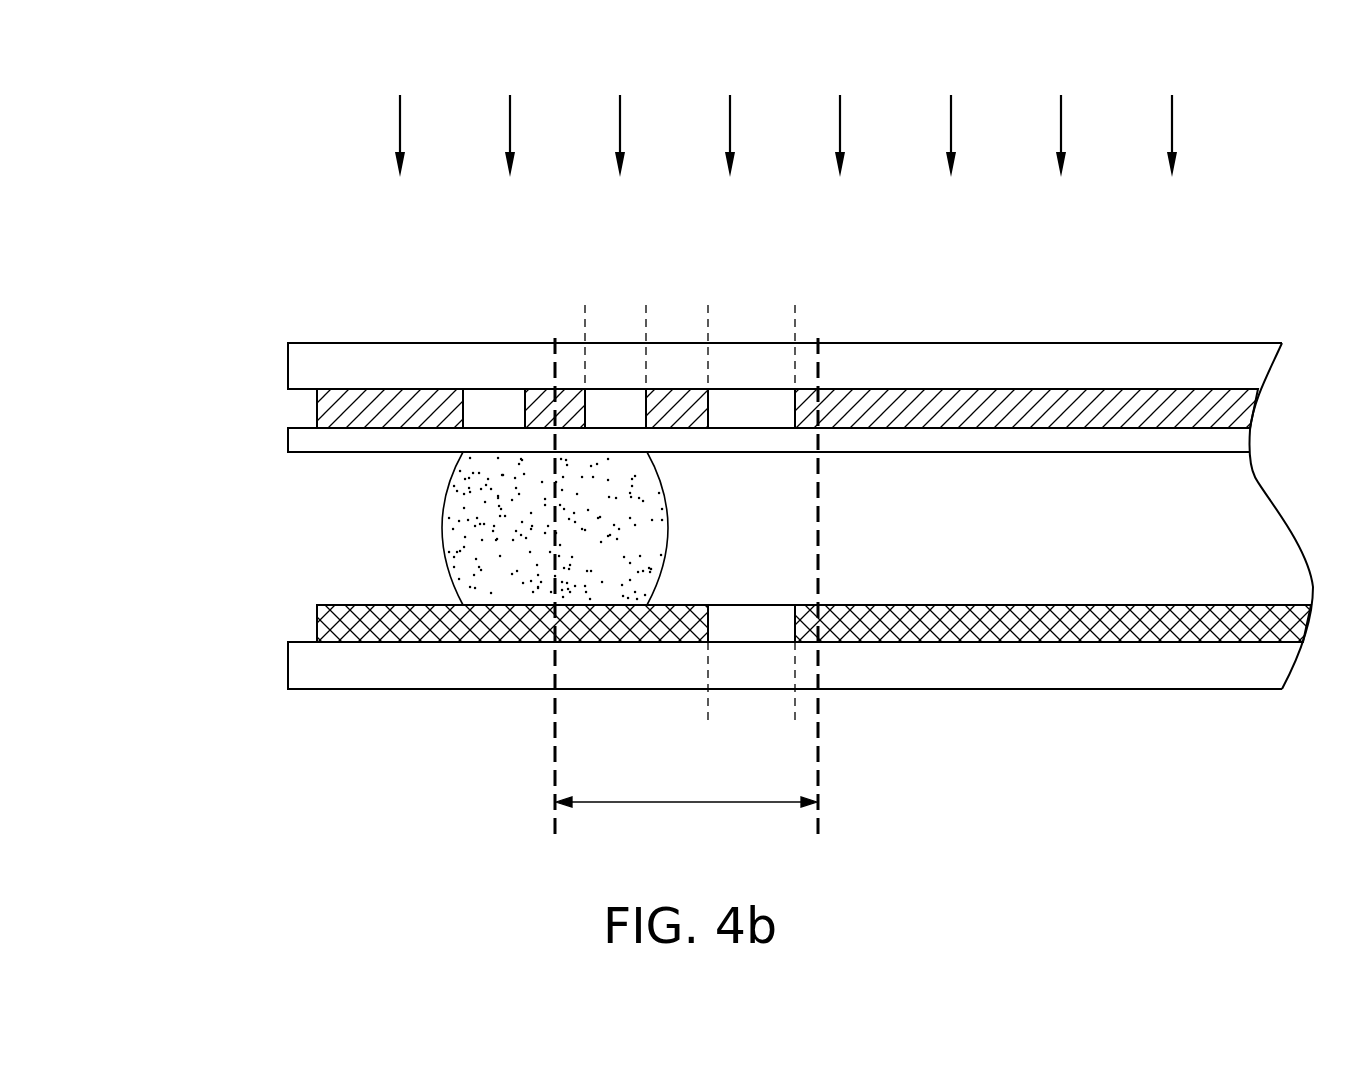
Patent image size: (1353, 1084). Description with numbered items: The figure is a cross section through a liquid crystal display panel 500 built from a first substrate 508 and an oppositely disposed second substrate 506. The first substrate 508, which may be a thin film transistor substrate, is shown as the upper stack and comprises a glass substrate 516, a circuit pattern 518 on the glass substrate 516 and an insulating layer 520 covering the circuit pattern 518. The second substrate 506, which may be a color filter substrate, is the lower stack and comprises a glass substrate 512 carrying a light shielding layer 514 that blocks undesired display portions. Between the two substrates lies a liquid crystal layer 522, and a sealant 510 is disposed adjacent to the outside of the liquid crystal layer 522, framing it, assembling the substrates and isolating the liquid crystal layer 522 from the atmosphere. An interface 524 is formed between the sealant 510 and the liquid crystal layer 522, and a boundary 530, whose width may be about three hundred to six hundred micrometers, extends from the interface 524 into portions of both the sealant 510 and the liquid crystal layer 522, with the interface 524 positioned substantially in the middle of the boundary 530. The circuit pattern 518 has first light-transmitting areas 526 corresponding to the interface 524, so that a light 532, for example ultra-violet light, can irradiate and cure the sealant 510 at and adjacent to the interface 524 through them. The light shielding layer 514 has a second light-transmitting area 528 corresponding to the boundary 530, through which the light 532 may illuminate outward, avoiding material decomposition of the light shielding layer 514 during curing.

The liquid crystal display panel 500 is at (150, 199).
The second substrate 506 is at (206, 622).
The first substrate 508 is at (206, 360).
The sealant 510 is at (457, 522).
The glass substrate 512 is at (300, 666).
The light shielding layer 514 is at (320, 616).
The glass substrate 516 is at (300, 360).
The circuit pattern 518 is at (320, 400).
The insulating layer 520 is at (300, 433).
The liquid crystal layer 522 is at (1065, 527).
The interface 524 is at (678, 527).
The first light-transmitting areas 526 is at (585, 298).
The second light-transmitting area 528 is at (795, 726).
The boundary 530 is at (560, 845).
The light 532 is at (400, 123).